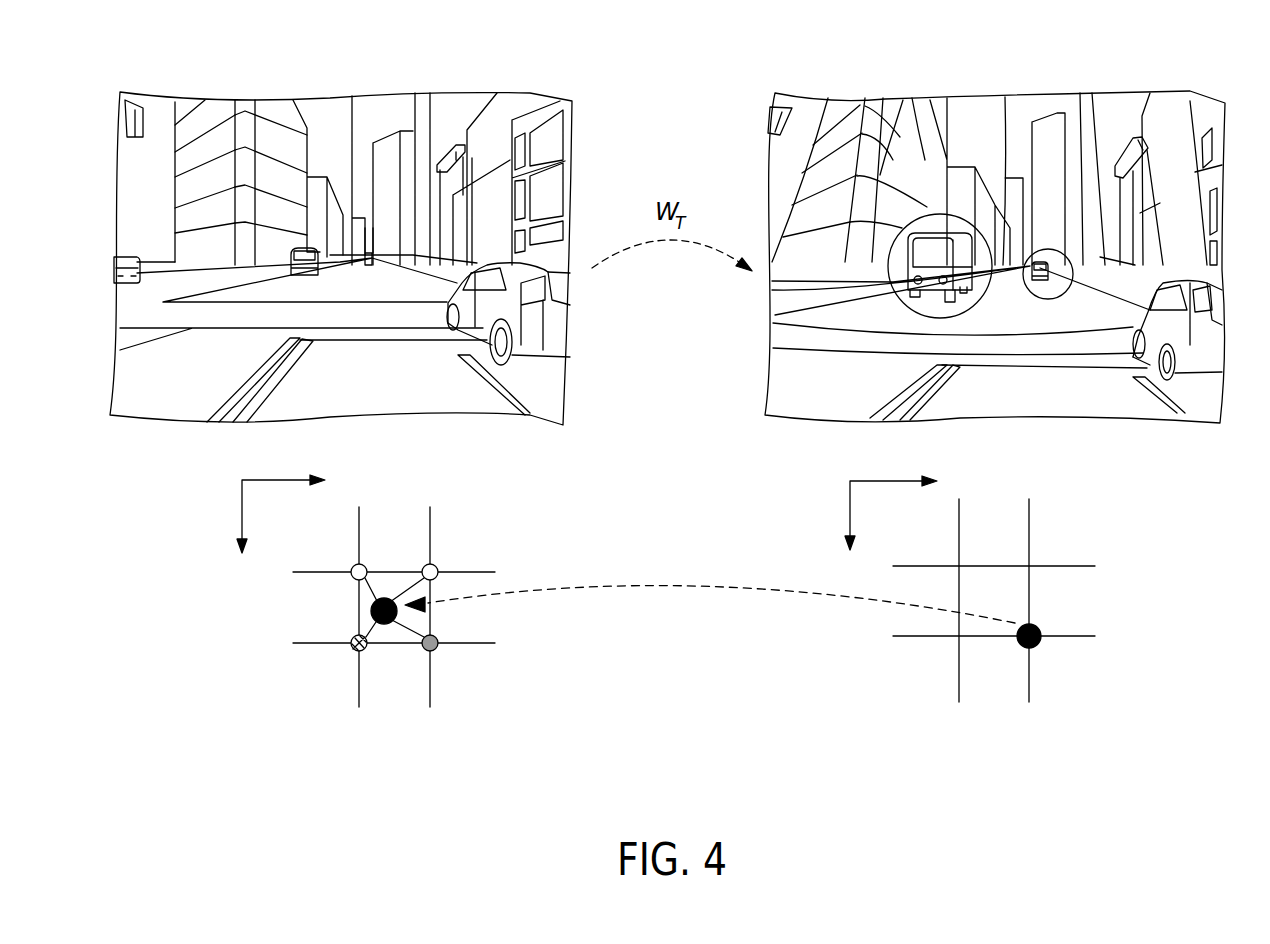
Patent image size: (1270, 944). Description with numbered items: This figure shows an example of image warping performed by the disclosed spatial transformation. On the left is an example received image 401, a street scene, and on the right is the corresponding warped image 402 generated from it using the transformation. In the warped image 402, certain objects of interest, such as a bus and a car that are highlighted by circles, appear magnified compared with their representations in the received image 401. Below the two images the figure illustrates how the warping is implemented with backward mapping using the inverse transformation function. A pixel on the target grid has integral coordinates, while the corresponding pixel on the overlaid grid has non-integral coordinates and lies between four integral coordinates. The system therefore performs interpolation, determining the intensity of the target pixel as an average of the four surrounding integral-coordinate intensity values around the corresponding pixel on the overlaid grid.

The received image 401 is at (338, 95).
The warped image 402 is at (1012, 95).